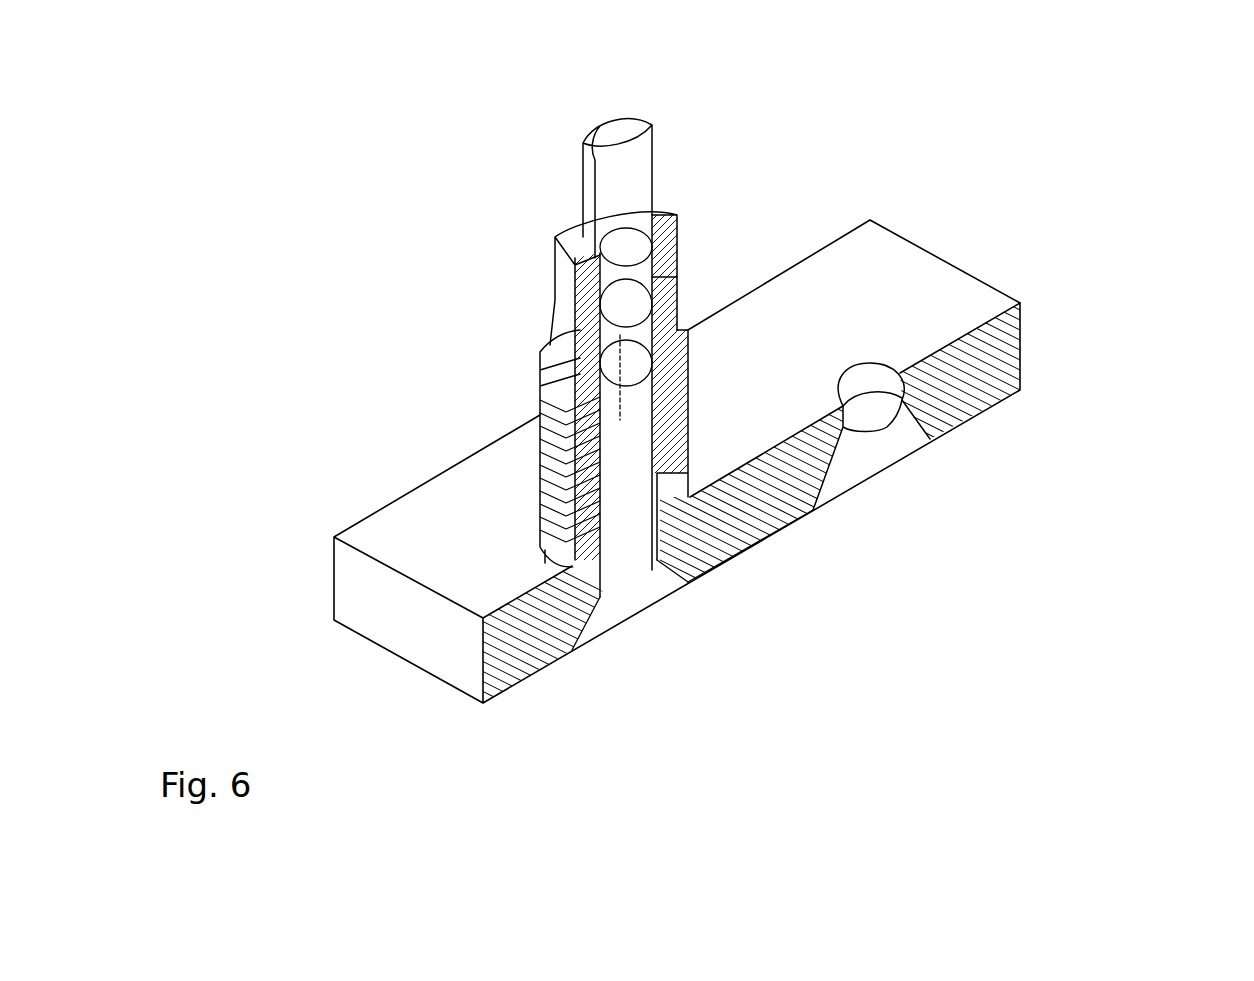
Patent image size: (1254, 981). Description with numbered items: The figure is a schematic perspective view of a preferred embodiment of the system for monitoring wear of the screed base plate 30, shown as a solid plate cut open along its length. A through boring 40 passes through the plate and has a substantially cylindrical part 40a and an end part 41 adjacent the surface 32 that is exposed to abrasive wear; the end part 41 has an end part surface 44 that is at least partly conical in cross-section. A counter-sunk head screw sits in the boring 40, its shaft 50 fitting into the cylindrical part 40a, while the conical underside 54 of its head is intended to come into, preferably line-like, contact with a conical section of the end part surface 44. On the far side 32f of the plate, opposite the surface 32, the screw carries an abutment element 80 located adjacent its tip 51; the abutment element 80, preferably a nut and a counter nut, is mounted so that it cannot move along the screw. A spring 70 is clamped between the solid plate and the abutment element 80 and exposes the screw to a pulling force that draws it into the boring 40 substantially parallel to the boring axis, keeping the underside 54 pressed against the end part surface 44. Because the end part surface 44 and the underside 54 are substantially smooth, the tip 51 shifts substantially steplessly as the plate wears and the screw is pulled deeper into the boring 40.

The screed base plate 30 is at (521, 660).
The surface 32 is at (710, 585).
The far side 32f is at (968, 248).
The through boring 40 is at (877, 462).
The cylindrical part 40a is at (993, 327).
The end part 41 is at (950, 430).
The end part surface 44 is at (898, 420).
The shaft 50 is at (620, 577).
The tip 51 is at (604, 101).
The underside 54 is at (610, 484).
The spring 70 is at (531, 463).
The abutment element 80 is at (698, 303).